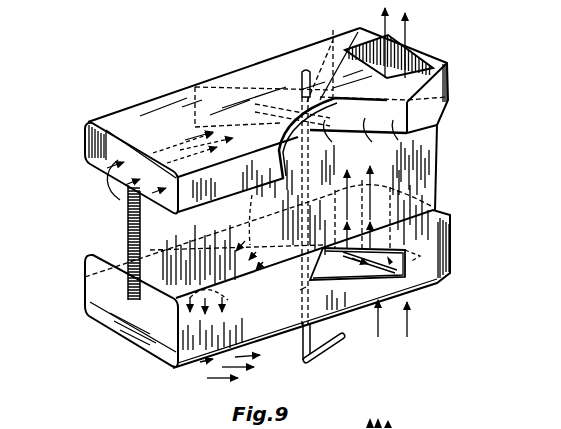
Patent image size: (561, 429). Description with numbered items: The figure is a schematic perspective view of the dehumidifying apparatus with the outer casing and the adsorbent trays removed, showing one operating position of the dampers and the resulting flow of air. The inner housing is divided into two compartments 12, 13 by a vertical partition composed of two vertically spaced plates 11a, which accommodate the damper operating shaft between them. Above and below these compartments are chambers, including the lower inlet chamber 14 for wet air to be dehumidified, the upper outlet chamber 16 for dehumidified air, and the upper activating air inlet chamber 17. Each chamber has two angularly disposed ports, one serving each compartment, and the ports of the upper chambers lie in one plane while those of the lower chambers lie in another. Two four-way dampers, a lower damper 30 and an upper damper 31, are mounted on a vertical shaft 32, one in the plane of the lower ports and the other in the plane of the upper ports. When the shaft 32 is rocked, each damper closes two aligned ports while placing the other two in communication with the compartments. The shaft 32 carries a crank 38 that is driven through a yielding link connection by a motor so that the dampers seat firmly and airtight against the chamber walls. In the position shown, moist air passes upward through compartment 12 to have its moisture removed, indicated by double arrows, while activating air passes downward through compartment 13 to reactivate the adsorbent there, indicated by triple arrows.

The vertically spaced plates 11a is at (435, 152).
The compartment 12 is at (413, 208).
The compartment 13 is at (117, 208).
The inlet chamber 14 is at (340, 268).
The outlet chamber 16 is at (372, 112).
The activating air inlet chamber 17 is at (84, 168).
The lower damper 30 is at (300, 286).
The upper damper 31 is at (303, 145).
The shaft 32 is at (310, 330).
The crank 38 is at (333, 337).